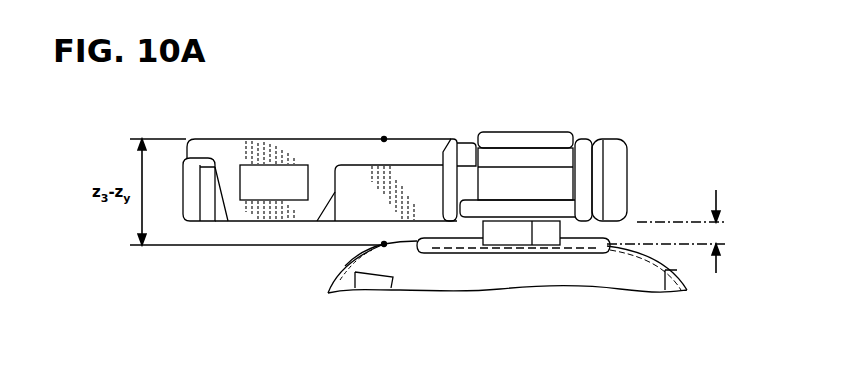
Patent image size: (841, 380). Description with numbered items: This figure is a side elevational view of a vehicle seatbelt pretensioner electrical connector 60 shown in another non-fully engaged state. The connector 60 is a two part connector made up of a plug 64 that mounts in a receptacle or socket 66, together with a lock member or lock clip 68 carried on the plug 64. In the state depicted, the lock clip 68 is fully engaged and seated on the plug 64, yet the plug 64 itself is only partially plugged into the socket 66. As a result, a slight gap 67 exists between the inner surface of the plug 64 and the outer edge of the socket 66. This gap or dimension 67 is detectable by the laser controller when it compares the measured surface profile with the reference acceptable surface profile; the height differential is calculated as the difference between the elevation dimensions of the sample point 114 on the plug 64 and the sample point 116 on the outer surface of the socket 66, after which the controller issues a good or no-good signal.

The electrical connector 60 is at (318, 153).
The plug 64 is at (362, 165).
The lock clip 68 is at (487, 185).
The sample point 114 is at (384, 137).
The sample point 116 is at (382, 245).
The socket 66 is at (423, 275).
The gap 67 is at (717, 231).